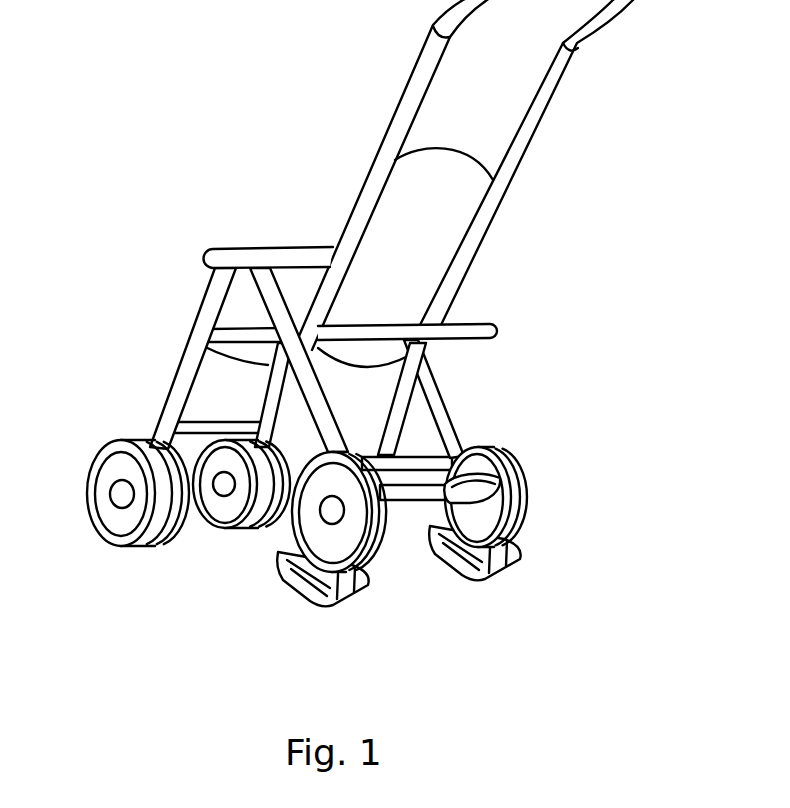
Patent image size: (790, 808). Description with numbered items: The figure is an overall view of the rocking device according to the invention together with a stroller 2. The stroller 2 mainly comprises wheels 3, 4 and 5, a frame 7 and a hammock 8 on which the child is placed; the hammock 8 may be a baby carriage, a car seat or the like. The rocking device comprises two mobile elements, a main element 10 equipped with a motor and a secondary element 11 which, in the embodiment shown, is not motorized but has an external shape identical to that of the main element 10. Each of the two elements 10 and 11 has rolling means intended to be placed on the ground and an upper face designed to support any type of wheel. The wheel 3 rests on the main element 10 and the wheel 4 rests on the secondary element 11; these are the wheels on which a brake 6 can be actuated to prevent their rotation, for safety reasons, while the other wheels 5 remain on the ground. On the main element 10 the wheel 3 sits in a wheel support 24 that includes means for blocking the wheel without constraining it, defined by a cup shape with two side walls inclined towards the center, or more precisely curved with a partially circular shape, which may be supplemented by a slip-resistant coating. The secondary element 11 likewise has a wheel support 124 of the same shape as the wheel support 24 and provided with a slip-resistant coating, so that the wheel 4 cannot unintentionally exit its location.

The stroller 2 is at (345, 76).
The wheel 3 is at (355, 453).
The wheel 4 is at (527, 508).
The wheels 5 is at (100, 452).
The brake 6 is at (493, 452).
The frame 7 is at (535, 130).
The hammock 8 is at (430, 252).
The main element 10 is at (350, 620).
The secondary element 11 is at (540, 585).
The wheel support 24 is at (288, 566).
The wheel support 124 is at (444, 553).